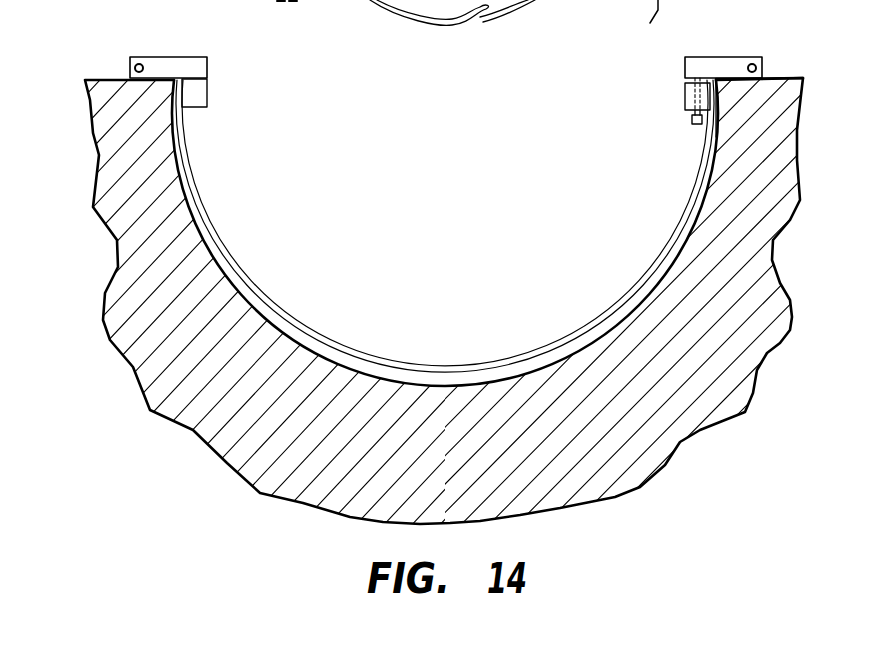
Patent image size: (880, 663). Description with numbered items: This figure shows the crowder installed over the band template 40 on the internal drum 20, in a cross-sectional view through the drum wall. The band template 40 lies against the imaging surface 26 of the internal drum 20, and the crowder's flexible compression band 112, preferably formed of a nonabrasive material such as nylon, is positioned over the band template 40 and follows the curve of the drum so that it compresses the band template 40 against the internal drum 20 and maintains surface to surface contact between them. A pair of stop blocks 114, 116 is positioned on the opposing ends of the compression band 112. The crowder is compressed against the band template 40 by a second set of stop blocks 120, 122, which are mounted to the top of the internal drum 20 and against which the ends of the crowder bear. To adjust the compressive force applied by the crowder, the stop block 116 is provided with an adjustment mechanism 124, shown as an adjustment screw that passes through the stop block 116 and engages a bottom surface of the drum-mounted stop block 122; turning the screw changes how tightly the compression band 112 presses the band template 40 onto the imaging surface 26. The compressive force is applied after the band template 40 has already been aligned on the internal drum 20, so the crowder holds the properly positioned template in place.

The internal drum 20 is at (678, 413).
The imaging surface 26 is at (724, 100).
The band template 40 is at (439, 385).
The compression band 112 is at (343, 357).
The stop block 114 is at (200, 97).
The stop block 116 is at (688, 100).
The stop block 120 is at (170, 65).
The stop block 122 is at (718, 64).
The adjustment mechanism 124 is at (698, 125).